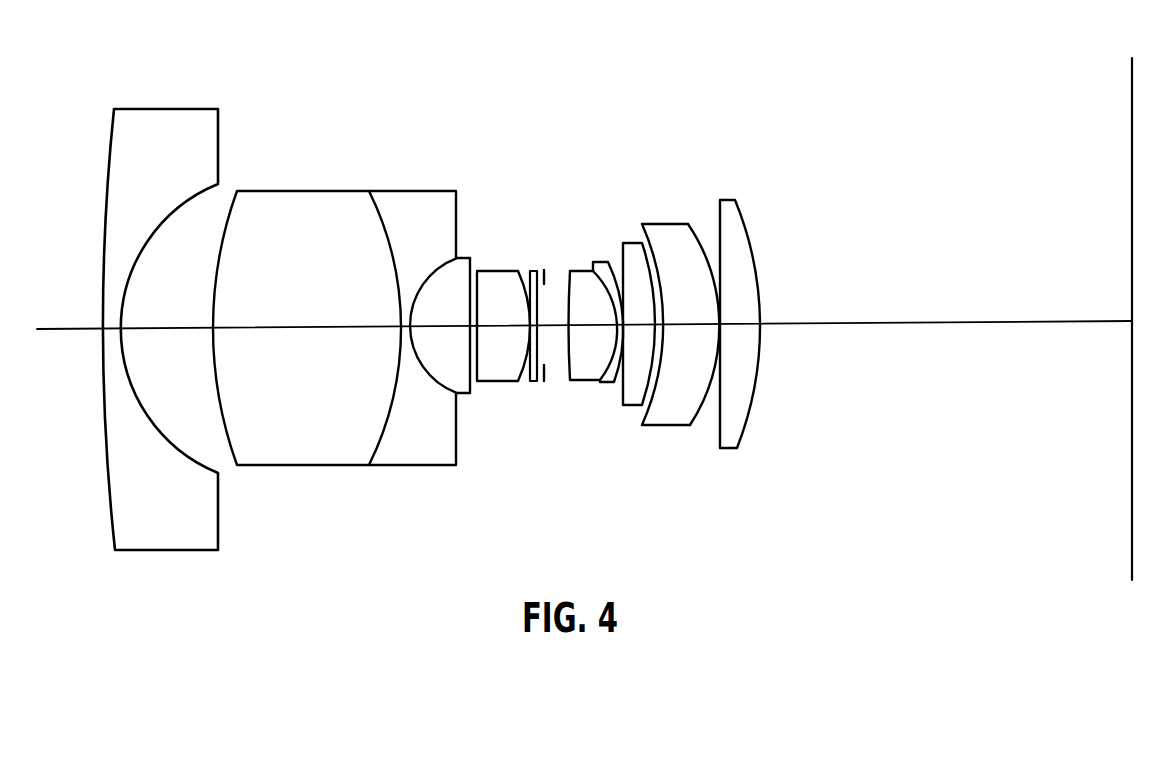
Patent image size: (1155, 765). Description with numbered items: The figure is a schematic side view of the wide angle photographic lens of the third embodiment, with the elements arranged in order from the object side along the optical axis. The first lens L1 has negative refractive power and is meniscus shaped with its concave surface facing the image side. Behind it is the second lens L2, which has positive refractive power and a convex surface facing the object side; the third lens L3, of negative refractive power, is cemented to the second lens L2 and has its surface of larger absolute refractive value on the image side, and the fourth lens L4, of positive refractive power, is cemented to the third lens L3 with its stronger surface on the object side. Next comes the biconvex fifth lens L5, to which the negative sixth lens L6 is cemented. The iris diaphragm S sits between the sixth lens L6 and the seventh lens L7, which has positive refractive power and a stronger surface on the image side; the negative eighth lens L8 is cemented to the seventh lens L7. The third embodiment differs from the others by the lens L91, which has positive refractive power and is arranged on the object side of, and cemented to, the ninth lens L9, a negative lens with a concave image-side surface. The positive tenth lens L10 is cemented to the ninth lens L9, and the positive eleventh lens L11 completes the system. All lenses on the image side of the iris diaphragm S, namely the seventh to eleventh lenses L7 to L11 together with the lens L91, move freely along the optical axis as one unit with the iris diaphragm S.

The first lens L1 is at (155, 113).
The second lens L2 is at (306, 200).
The third lens L3 is at (421, 200).
The fourth lens L4 is at (462, 277).
The fifth lens L5 is at (502, 368).
The sixth lens L6 is at (528, 368).
The iris diaphragm S is at (548, 285).
The seventh lens L7 is at (580, 378).
The eighth lens L8 is at (598, 378).
The lens L91 is at (632, 245).
The ninth lens L9 is at (660, 232).
The tenth lens L10 is at (688, 232).
The eleventh lens L11 is at (728, 435).